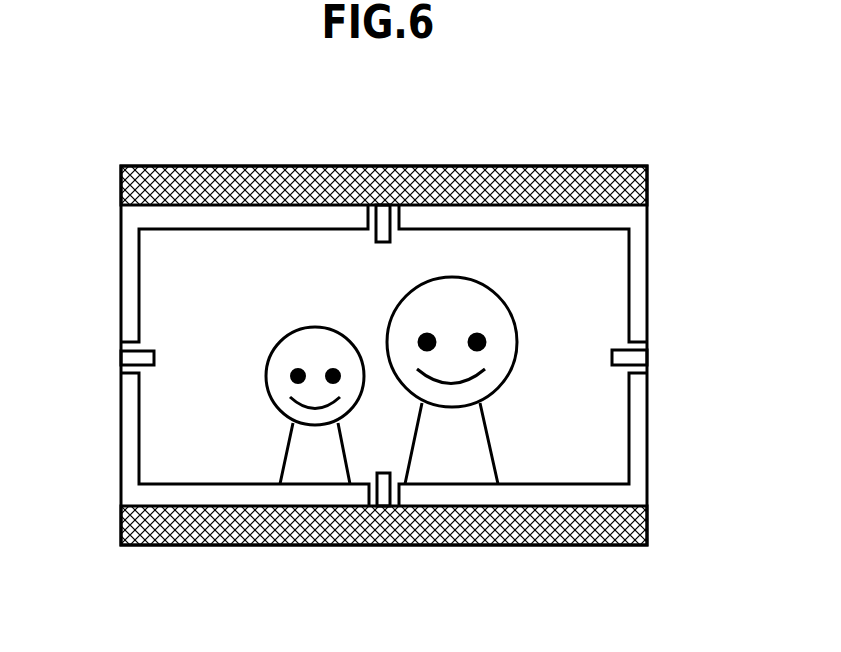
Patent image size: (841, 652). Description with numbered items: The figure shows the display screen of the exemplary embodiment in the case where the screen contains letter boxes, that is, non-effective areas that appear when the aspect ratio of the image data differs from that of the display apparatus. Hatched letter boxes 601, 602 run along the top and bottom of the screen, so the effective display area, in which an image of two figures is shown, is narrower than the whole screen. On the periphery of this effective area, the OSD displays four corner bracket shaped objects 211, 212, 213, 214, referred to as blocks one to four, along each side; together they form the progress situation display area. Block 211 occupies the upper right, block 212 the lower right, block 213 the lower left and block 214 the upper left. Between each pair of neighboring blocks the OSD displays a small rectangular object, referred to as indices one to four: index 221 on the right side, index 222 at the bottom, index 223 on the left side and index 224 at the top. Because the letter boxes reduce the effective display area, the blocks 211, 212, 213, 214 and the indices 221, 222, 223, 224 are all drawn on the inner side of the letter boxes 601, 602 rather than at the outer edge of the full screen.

The letter box 601 is at (570, 166).
The letter box 602 is at (553, 546).
The corner bracket shaped object (block 1) 211 is at (640, 290).
The corner bracket shaped object (block 2) 212 is at (640, 444).
The corner bracket shaped object (block 3) 213 is at (122, 452).
The corner bracket shaped object (block 4) 214 is at (122, 264).
The rectangular object (index 1) 221 is at (640, 357).
The rectangular object (index 2) 222 is at (383, 508).
The rectangular object (index 3) 223 is at (122, 358).
The rectangular object (index 4) 224 is at (384, 208).